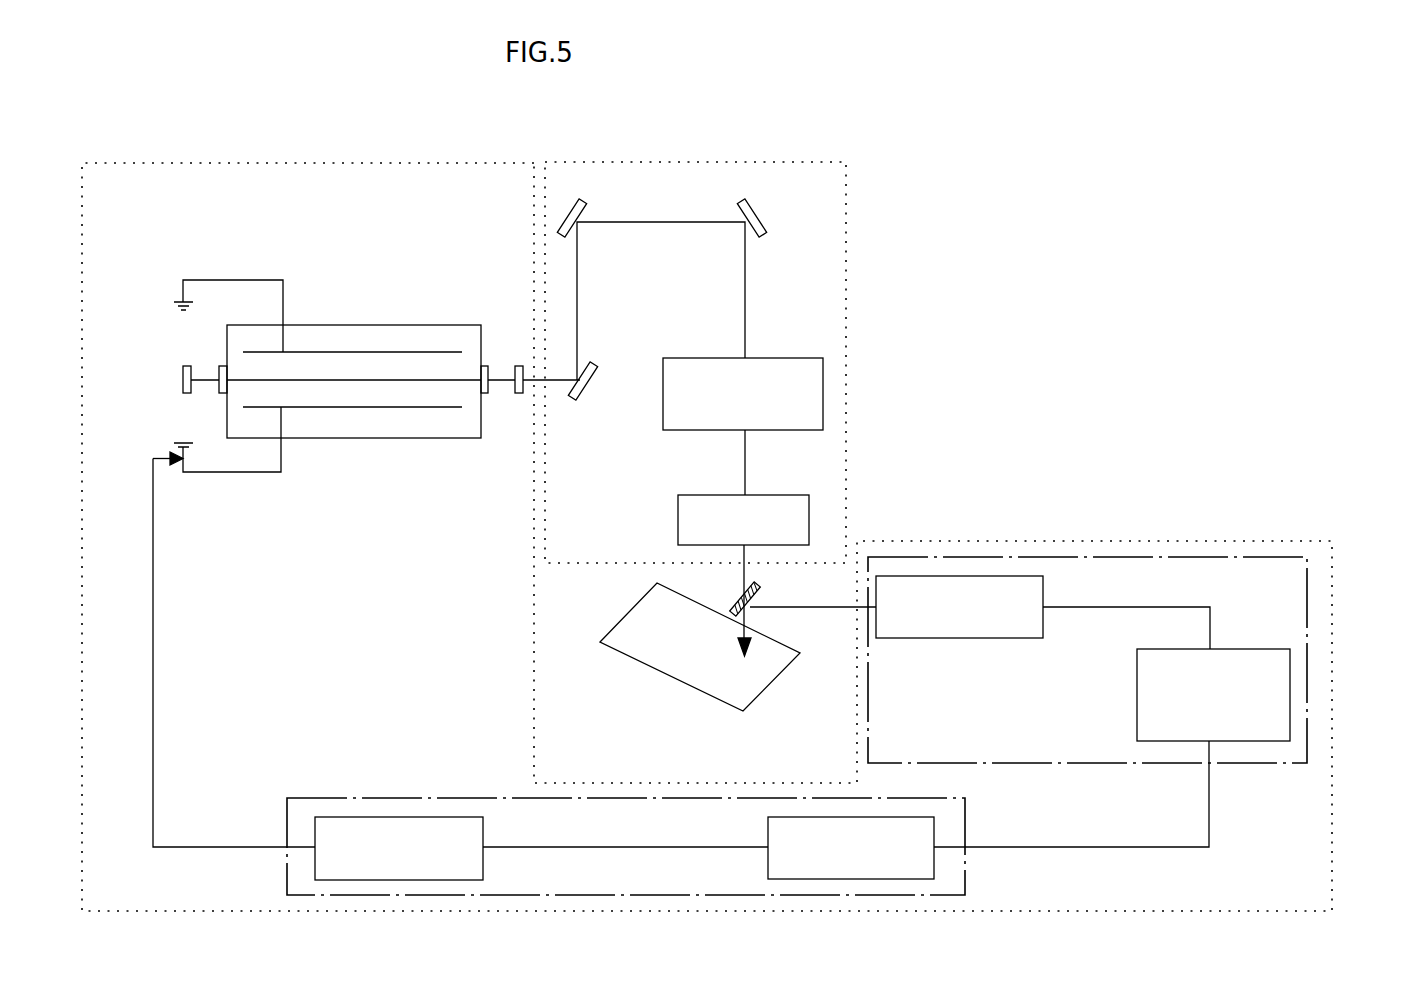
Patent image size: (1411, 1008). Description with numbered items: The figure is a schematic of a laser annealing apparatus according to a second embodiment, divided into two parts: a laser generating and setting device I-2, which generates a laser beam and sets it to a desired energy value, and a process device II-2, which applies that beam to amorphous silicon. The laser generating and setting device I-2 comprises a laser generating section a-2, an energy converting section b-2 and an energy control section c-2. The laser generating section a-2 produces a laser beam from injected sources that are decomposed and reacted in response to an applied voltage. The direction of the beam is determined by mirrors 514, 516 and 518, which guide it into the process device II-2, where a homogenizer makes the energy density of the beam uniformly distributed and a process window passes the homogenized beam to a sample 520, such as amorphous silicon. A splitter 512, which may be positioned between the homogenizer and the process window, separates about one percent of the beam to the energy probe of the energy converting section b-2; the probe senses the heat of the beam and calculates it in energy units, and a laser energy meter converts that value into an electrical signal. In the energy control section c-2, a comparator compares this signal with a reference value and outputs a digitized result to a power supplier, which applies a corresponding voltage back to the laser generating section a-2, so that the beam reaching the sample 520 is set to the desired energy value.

The splitter 512 is at (762, 586).
The mirror 514 is at (590, 392).
The mirror 516 is at (580, 204).
The mirror 518 is at (758, 212).
The sample 520 is at (633, 608).
The laser generating section a-2 is at (393, 438).
The energy converting section b-2 is at (1107, 557).
The energy control section c-2 is at (375, 798).
The laser generating and setting device I-2 is at (1333, 698).
The process device II-2 is at (846, 342).